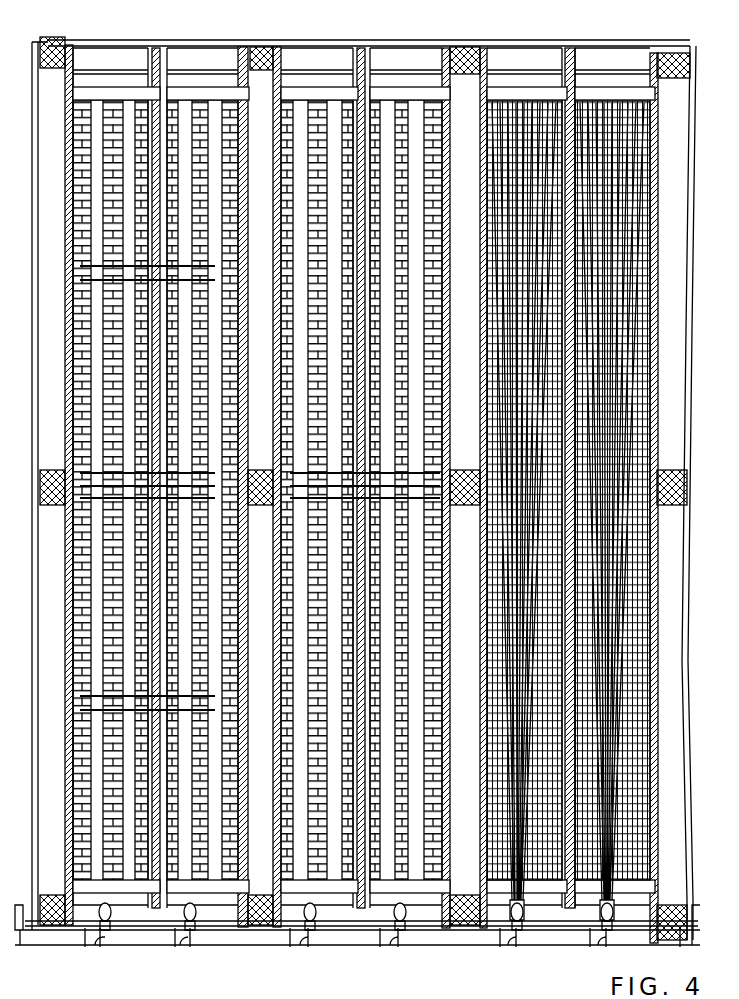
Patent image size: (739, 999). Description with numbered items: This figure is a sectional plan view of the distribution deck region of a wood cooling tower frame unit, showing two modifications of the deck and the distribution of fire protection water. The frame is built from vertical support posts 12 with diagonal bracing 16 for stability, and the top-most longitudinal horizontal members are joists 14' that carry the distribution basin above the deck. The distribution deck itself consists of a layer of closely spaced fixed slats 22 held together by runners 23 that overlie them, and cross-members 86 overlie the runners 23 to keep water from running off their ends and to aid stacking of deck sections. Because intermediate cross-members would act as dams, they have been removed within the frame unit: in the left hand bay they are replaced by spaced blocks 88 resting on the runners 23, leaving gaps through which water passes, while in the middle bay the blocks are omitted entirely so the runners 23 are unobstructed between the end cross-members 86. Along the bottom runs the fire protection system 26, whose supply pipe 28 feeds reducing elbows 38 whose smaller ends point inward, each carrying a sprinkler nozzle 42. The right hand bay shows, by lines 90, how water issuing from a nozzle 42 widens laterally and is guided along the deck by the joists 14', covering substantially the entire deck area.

The vertical support post 12 is at (46, 44).
The joist 14' is at (352, 474).
The diagonal bracing 16 is at (530, 44).
The fixed slat 22 is at (228, 626).
The runner 23 is at (90, 627).
The fire protection system 26 is at (90, 955).
The supply pipe 28 is at (146, 946).
The reducing elbow 38 is at (308, 942).
The sprinkler nozzle 42 is at (310, 912).
The cross-member 86 is at (82, 94).
The block 88 is at (216, 270).
The lines 90 is at (492, 175).